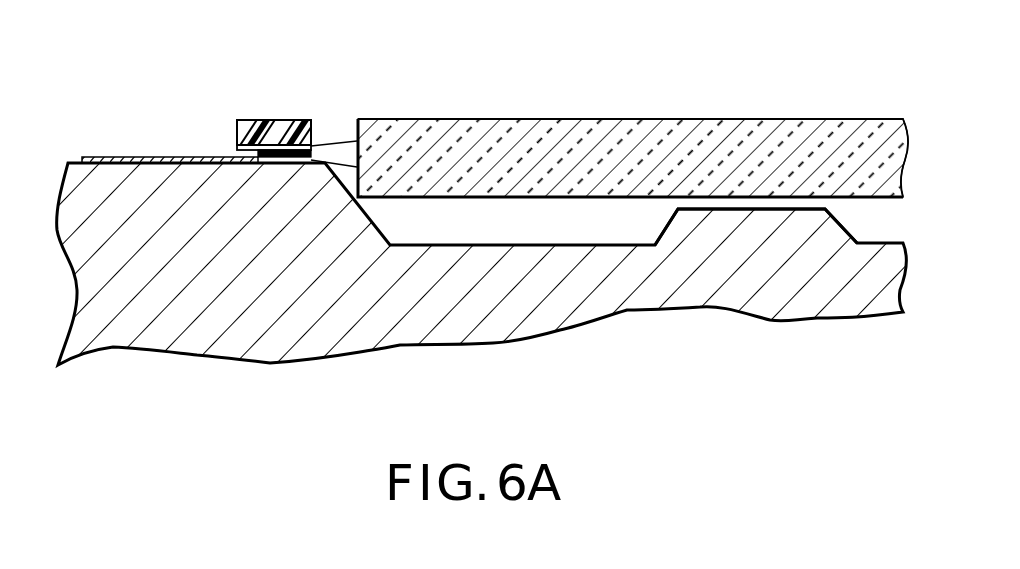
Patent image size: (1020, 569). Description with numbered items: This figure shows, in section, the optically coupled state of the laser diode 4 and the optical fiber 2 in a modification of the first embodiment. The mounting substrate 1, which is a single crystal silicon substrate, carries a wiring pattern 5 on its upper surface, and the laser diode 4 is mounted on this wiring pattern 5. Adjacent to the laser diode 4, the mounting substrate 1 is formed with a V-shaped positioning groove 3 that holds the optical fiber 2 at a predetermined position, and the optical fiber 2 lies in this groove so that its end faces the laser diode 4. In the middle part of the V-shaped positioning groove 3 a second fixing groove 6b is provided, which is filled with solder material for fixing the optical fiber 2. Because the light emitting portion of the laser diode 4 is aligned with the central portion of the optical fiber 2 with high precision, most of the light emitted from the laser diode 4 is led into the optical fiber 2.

The mounting substrate 1 is at (100, 196).
The optical fiber 2 is at (841, 117).
The V-shaped positioning groove 3 is at (507, 282).
The laser diode 4 is at (294, 119).
The wiring pattern 5 is at (101, 150).
The second fixing groove 6b is at (758, 212).